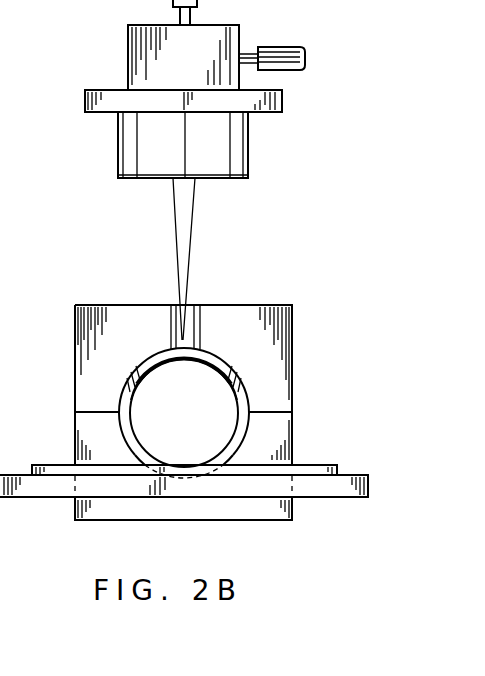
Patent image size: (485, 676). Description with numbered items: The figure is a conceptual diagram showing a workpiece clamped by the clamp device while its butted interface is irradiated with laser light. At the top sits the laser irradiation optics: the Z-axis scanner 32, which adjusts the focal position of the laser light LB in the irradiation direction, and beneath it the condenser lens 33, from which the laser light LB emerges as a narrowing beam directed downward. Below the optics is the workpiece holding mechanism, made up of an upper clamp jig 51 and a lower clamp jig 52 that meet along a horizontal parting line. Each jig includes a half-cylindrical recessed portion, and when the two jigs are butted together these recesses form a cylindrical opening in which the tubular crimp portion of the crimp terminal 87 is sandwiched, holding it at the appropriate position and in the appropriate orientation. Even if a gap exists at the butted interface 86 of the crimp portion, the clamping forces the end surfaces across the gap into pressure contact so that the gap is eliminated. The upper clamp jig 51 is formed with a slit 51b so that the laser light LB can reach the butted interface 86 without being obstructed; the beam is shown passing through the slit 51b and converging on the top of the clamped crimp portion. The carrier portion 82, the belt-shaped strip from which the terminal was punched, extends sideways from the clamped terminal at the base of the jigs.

The Z-axis scanner 32 is at (130, 46).
The condenser lens 33 is at (248, 142).
The laser light LB is at (195, 217).
The upper clamp jig 51 is at (292, 355).
The slit 51b is at (188, 322).
The lower clamp jig 52 is at (292, 440).
The butted interface 86 is at (161, 347).
The crimp terminal 87 is at (124, 383).
The carrier portion 82 is at (325, 466).